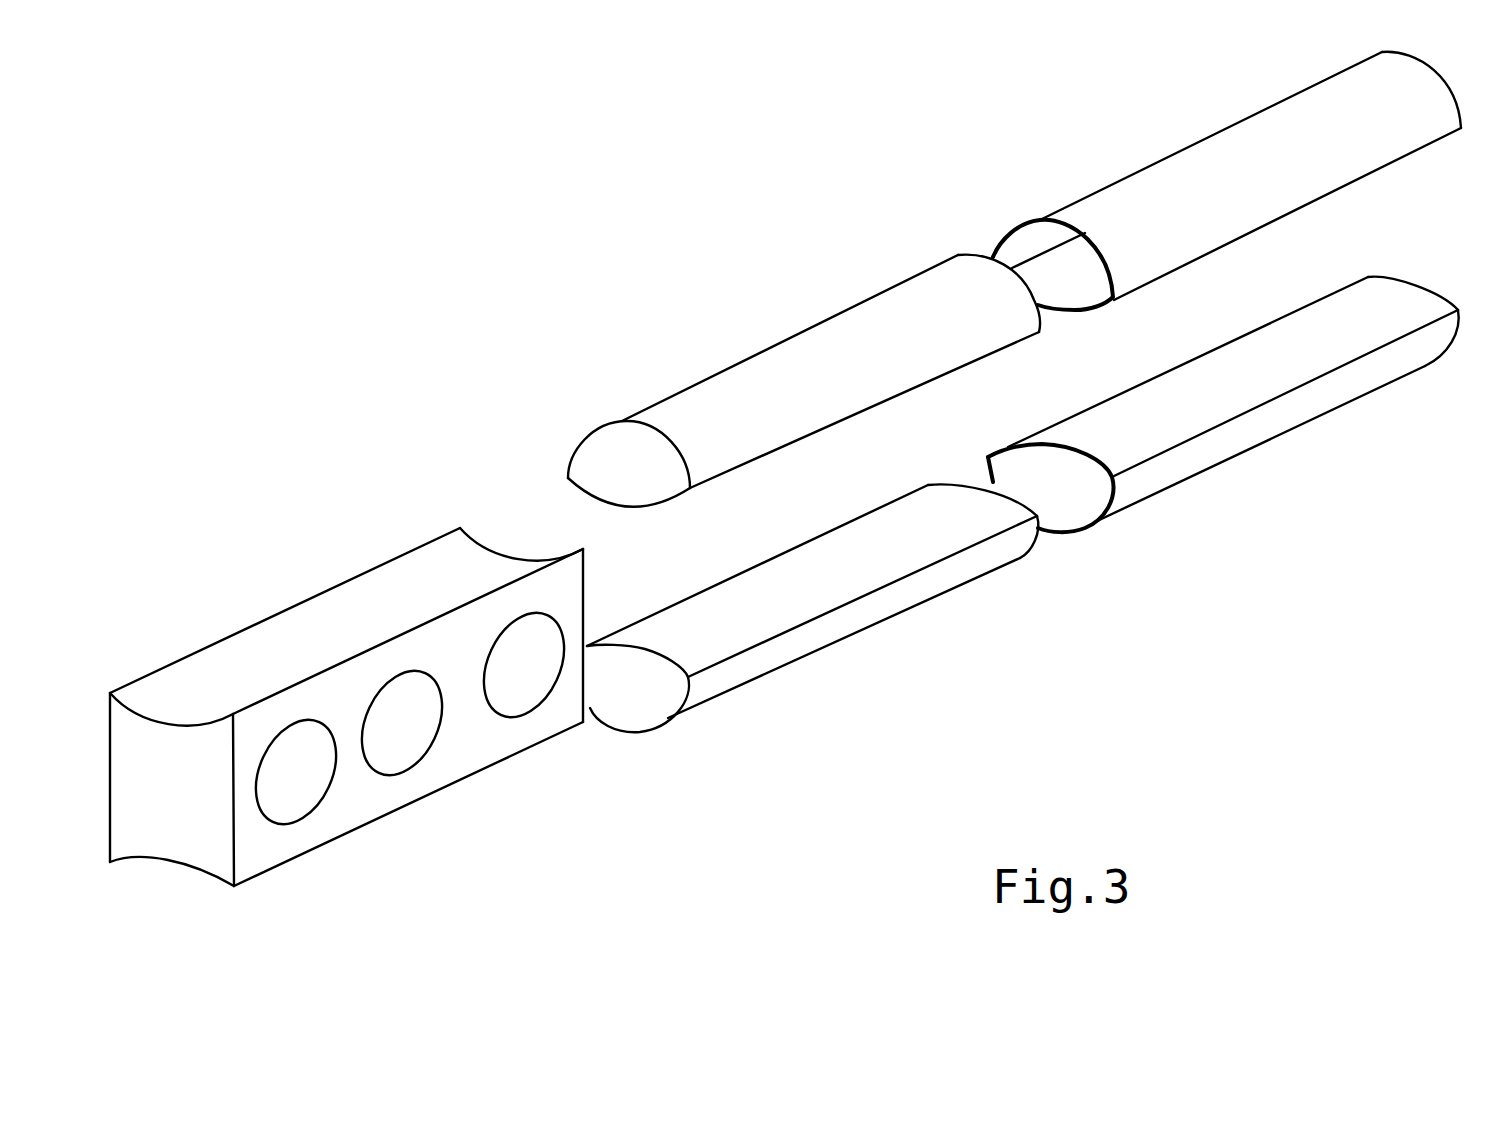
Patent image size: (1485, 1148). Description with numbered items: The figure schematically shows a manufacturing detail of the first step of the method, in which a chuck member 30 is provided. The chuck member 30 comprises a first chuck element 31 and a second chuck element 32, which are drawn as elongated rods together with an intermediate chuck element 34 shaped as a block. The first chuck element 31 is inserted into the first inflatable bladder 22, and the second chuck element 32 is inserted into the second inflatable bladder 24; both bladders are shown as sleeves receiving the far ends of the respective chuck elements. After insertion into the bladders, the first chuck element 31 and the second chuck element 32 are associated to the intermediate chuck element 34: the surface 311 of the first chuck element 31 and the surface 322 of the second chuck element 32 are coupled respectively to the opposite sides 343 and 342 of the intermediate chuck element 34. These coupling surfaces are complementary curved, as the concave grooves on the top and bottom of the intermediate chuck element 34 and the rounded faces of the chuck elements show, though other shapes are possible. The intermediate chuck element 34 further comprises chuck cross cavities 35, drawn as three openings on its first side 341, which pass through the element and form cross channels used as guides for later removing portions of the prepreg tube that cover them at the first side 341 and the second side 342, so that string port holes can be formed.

The chuck member 30 is at (690, 258).
The first chuck element 31 is at (652, 409).
The surface of the first chuck element 311 is at (717, 496).
The second chuck element 32 is at (719, 715).
The surface of the second chuck element 322 is at (887, 562).
The intermediate chuck element 34 is at (173, 870).
The first side of the intermediate chuck element 341 is at (247, 858).
The second side of the intermediate chuck element 342 is at (212, 873).
The side of the intermediate chuck element 343 is at (197, 666).
The chuck cross cavities 35 is at (302, 802).
The first inflatable bladder 22 is at (1006, 215).
The second inflatable bladder 24 is at (1222, 474).